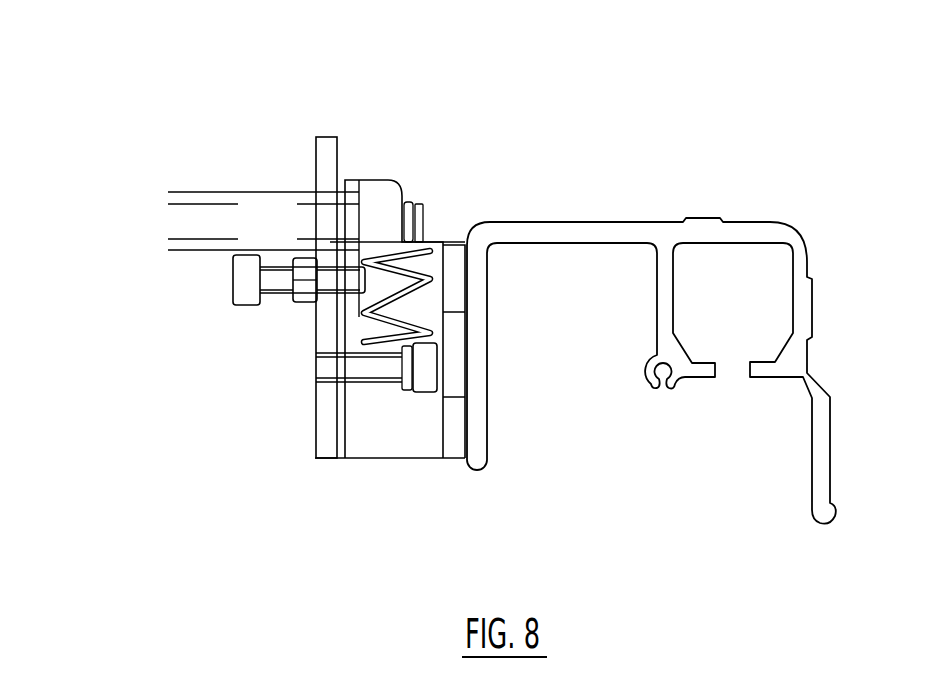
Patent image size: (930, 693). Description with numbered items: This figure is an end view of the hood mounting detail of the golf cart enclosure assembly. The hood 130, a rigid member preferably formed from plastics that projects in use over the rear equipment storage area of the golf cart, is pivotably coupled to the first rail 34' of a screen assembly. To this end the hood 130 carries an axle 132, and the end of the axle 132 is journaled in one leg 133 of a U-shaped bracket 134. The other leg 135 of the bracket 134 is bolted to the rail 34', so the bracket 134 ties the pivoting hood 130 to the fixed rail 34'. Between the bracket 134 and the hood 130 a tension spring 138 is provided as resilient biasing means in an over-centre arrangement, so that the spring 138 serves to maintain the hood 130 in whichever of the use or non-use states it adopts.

The leg 133 is at (316, 150).
The hood 130 is at (210, 192).
The axle 132 is at (203, 224).
The tension spring 138 is at (359, 318).
The U-shaped bracket 134 is at (316, 418).
The leg 135 is at (453, 257).
The first rail 34' is at (651, 267).